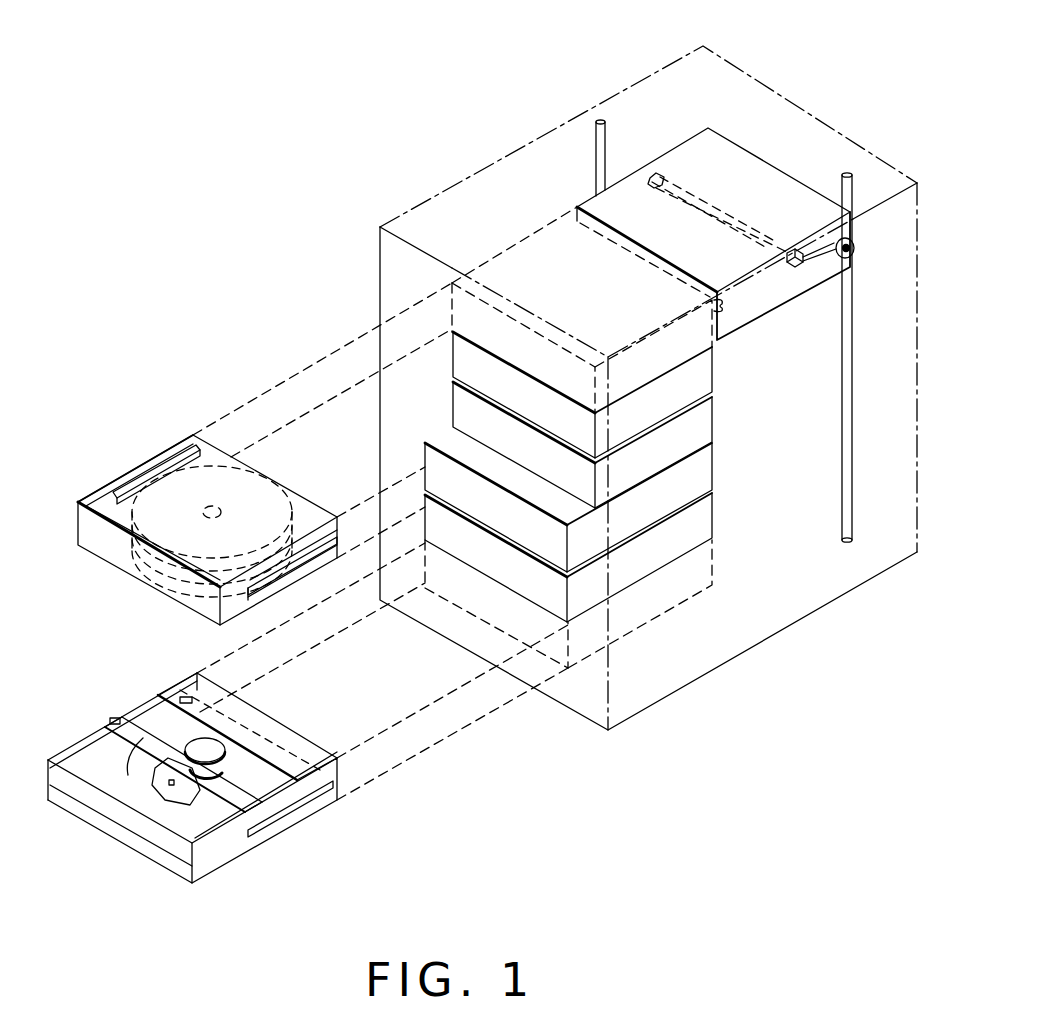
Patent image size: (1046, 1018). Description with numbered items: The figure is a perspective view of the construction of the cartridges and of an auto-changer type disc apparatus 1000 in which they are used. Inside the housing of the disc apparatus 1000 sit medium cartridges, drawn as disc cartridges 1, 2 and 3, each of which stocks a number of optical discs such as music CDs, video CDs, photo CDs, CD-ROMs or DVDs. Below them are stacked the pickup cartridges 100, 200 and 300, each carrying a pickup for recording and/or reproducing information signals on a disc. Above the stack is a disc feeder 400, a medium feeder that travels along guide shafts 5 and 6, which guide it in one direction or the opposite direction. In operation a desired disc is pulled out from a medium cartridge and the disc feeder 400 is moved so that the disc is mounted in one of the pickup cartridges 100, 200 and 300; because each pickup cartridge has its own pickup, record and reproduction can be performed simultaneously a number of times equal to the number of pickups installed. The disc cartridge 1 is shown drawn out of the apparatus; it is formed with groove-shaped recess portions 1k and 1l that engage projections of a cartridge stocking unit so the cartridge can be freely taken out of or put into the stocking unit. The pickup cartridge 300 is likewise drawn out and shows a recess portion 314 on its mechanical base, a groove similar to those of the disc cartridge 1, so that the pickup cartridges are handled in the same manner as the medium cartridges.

The disc cartridge 1 is at (107, 547).
The groove-shaped recess portion 1k is at (137, 497).
The groove-shaped recess portion 1l is at (305, 553).
The medium cartridge 2 is at (712, 376).
The medium cartridge 3 is at (712, 424).
The guide shaft 5 is at (605, 152).
The guide shaft 6 is at (843, 190).
The pickup cartridge 100 is at (708, 471).
The pickup cartridge 200 is at (708, 523).
The pickup cartridge 300 is at (135, 812).
The recess portion 314 is at (317, 793).
The disc feeder 400 is at (752, 172).
The auto-changer type disc apparatus 1000 is at (787, 627).